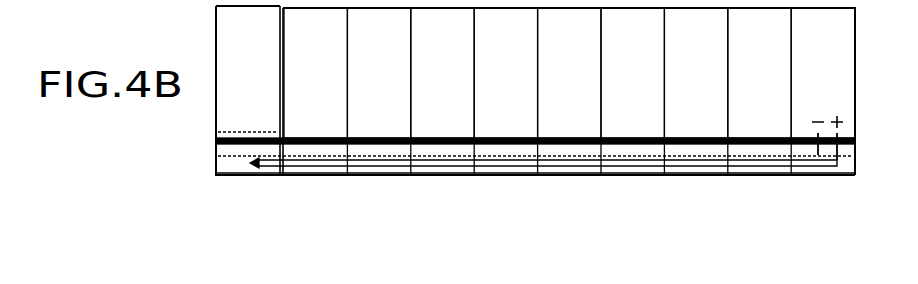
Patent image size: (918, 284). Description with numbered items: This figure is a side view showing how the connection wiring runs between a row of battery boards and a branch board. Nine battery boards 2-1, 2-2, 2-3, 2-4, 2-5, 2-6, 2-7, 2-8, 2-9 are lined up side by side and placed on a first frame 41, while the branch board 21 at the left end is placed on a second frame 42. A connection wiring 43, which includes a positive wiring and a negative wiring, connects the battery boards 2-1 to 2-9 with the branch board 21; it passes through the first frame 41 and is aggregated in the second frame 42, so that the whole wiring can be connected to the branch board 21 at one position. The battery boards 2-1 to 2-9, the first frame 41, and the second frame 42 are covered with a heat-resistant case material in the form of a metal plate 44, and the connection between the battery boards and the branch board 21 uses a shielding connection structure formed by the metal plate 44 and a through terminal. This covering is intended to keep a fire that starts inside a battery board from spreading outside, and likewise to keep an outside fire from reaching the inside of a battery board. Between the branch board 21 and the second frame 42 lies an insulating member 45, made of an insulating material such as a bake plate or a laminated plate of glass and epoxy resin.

The branch board 21 is at (215, 25).
The battery board 2-1 is at (315, 91).
The battery board 2-2 is at (378, 91).
The battery board 2-3 is at (442, 91).
The battery board 2-4 is at (505, 91).
The battery board 2-5 is at (569, 91).
The battery board 2-6 is at (632, 91).
The battery board 2-7 is at (695, 91).
The battery board 2-8 is at (759, 91).
The battery board 2-9 is at (823, 73).
The first frame 41 is at (758, 167).
The second frame 42 is at (215, 168).
The connection wiring 43 is at (515, 175).
The metal plate 44 is at (383, 175).
The insulating member 45 is at (215, 143).